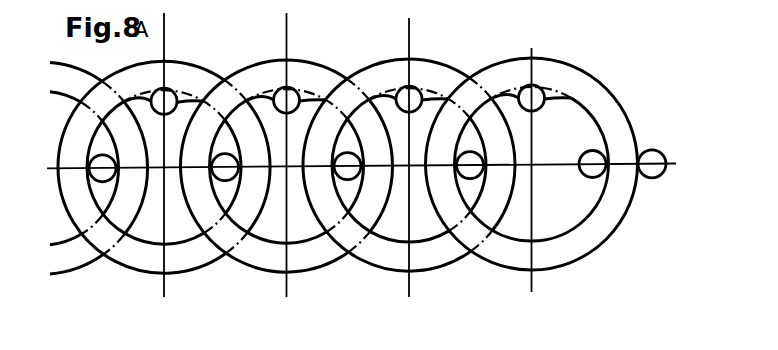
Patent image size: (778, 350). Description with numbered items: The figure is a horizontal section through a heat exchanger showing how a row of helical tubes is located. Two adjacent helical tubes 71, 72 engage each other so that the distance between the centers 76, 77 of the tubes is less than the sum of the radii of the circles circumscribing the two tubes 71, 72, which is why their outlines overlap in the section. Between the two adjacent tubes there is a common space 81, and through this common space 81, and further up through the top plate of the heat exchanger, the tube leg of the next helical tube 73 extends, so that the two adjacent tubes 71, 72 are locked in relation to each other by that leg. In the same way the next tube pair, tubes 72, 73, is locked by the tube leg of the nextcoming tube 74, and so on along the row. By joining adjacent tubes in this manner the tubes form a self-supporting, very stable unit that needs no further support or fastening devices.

The helical tube 71 is at (612, 110).
The helical tube 72 is at (418, 68).
The helical tube 73 is at (298, 70).
The helical tube 74 is at (176, 70).
The center of the tube 76 is at (532, 164).
The center of the tube 77 is at (409, 165).
The common space 81 is at (464, 187).